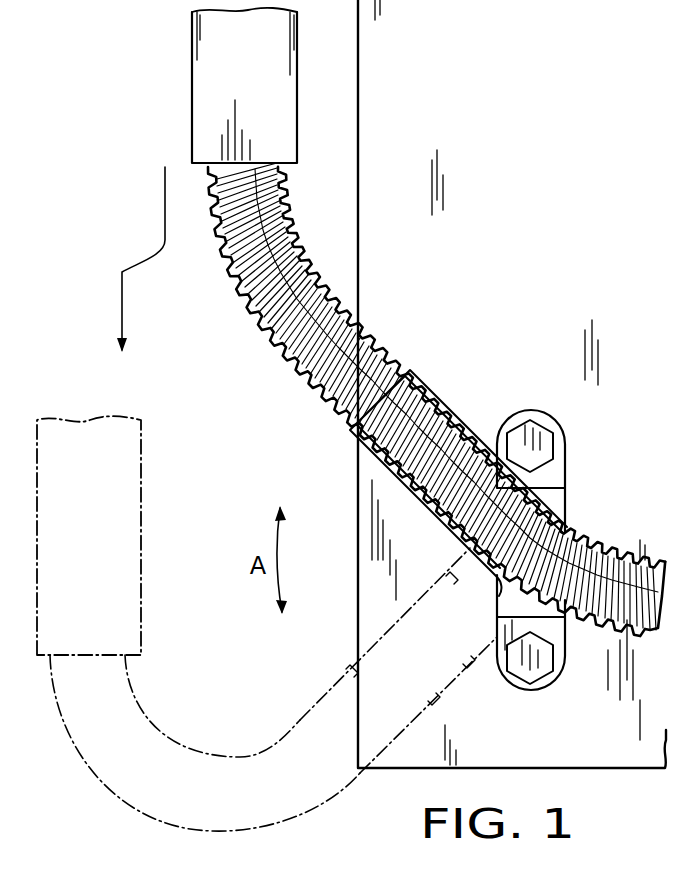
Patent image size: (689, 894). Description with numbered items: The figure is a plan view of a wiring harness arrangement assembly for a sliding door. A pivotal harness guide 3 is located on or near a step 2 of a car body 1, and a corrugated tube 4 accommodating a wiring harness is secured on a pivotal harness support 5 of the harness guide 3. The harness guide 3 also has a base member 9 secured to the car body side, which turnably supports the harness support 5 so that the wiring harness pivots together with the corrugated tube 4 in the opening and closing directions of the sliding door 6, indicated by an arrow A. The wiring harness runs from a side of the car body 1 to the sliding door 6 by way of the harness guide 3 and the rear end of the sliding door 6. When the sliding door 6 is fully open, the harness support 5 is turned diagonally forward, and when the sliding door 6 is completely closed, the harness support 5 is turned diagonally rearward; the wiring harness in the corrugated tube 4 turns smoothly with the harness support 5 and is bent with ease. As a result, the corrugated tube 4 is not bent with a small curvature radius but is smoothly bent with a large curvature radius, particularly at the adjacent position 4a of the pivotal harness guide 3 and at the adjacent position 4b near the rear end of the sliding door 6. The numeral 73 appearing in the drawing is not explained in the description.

The car body 1 is at (430, 275).
The step 2 is at (402, 340).
The pivotal harness guide 3 is at (575, 507).
The corrugated tube 4 is at (360, 270).
The adjacent position of the pivotal harness guide 4a is at (440, 660).
The adjacent position of a rear end of the sliding door 4b is at (163, 788).
The pivotal harness support 5 is at (457, 410).
The sliding door 6 is at (192, 88).
The base member 9 is at (538, 668).
The hose end portion 73 is at (270, 893).